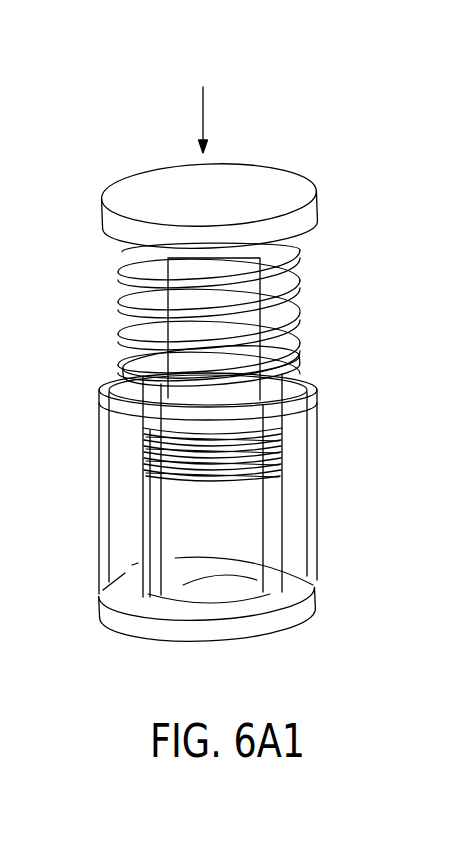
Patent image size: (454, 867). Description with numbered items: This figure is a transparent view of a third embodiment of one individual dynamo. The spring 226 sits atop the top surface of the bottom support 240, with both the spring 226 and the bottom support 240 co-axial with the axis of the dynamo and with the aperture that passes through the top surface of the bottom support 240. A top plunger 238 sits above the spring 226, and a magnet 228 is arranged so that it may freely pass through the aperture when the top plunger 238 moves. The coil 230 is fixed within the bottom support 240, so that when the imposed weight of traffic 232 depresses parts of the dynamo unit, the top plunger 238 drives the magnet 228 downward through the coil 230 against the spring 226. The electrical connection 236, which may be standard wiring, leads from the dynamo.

The spring 226 is at (300, 283).
The magnet 228 is at (288, 330).
The coil 230 is at (278, 447).
The imposed weight of traffic 232 is at (193, 98).
The electrical connection 236 is at (143, 593).
The top plunger 238 is at (186, 190).
The bottom support 240 is at (200, 633).